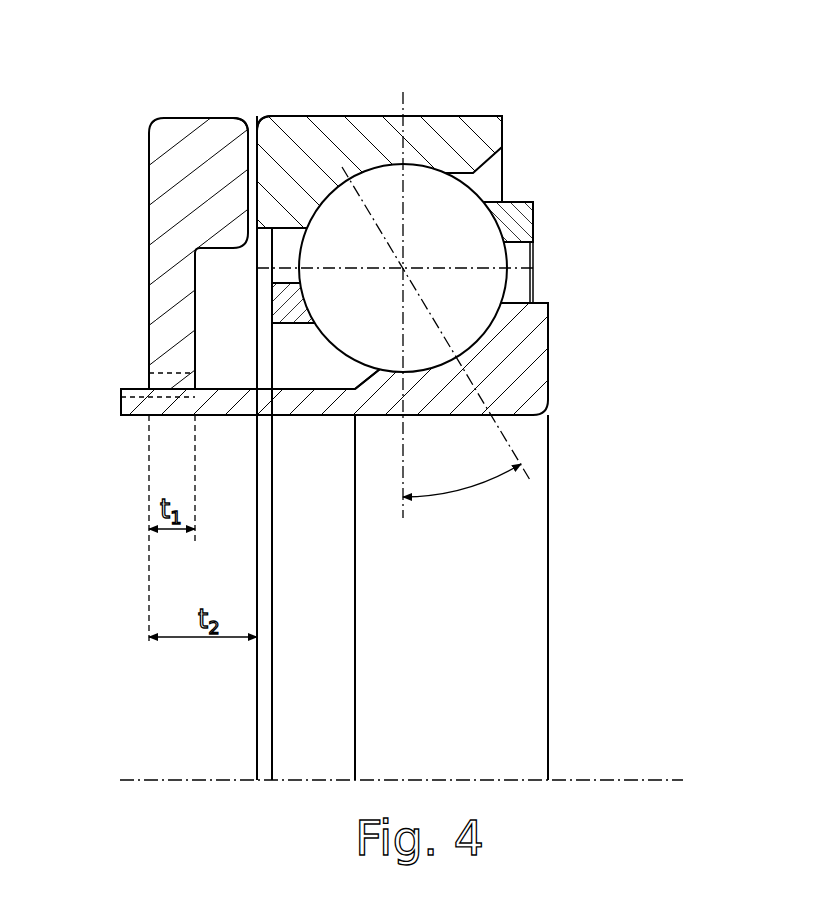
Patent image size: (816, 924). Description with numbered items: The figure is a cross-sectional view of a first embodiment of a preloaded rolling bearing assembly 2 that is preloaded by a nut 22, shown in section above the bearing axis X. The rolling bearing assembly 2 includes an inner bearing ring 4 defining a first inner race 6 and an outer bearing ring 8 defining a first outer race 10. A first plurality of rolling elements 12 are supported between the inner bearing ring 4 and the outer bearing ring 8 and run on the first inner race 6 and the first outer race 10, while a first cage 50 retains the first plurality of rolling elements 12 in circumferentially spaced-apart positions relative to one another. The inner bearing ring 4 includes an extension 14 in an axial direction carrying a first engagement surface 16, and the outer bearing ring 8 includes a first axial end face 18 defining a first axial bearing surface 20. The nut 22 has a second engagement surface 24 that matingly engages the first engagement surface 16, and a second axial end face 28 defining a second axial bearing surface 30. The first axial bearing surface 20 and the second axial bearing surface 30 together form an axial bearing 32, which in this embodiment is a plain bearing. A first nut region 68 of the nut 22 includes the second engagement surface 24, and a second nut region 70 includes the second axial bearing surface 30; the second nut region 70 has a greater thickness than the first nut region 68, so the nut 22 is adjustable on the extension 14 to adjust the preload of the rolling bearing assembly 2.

The rolling bearing assembly 2 is at (146, 126).
The nut 22 is at (206, 113).
The second nut region 70 is at (183, 117).
The second axial bearing surface 30 is at (245, 165).
The second axial end face 28 is at (245, 200).
The first nut region 68 is at (167, 331).
The second engagement surface 24 is at (150, 366).
The first engagement surface 16 is at (135, 389).
The extension 14 is at (246, 408).
The outer bearing ring 8 is at (474, 134).
The axial bearing 32 is at (258, 122).
The first axial bearing surface 20 is at (262, 136).
The first axial end face 18 is at (258, 136).
The inner bearing ring 4 is at (524, 350).
The first inner race 6 is at (482, 345).
The first cage 50 is at (522, 222).
The first plurality of rolling elements 12 is at (450, 215).
The first outer race 10 is at (372, 161).
The rotation axis X is at (623, 780).